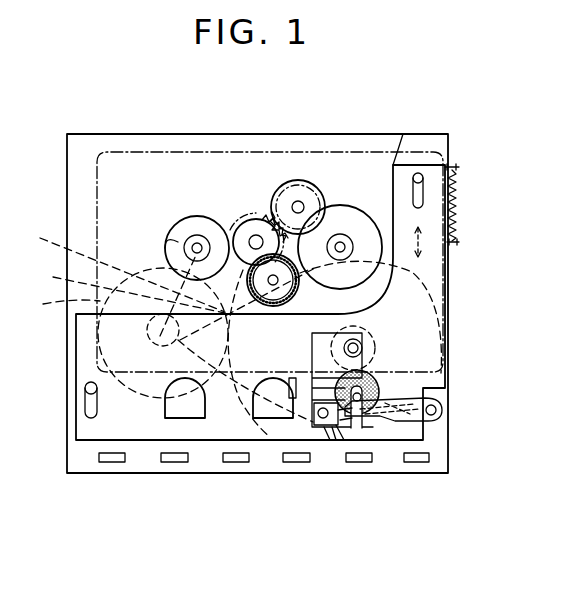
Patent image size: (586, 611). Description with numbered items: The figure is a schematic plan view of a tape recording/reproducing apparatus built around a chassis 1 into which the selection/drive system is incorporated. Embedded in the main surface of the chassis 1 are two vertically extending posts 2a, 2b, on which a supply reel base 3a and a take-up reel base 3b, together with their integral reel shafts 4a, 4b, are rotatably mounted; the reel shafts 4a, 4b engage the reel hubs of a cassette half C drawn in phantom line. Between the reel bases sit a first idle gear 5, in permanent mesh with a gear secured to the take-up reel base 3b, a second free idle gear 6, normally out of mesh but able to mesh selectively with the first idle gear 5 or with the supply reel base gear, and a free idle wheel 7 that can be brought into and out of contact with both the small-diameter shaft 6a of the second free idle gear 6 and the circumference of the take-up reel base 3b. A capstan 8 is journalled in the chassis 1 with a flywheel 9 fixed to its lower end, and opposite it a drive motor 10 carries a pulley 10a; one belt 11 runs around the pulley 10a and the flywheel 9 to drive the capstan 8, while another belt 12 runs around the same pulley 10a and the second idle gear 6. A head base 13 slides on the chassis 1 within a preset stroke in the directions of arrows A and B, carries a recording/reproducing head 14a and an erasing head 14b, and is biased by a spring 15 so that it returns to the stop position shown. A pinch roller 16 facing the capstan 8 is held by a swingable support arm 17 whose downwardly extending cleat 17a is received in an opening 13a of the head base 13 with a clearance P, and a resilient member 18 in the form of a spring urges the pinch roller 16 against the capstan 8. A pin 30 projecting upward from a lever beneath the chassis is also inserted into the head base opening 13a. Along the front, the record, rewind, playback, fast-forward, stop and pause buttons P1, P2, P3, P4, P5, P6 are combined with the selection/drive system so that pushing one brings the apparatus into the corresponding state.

The chassis 1 is at (78, 148).
The post 2a is at (196, 236).
The post 2b is at (334, 242).
The supply reel base 3a is at (190, 220).
The take-up reel base 3b is at (350, 217).
The reel shaft 4a is at (178, 242).
The reel shaft 4b is at (392, 160).
The first idle gear 5 is at (297, 192).
The second free idle gear 6 is at (250, 228).
The small-diameter shaft 6a is at (256, 240).
The free idle wheel 7 is at (262, 265).
The capstan 8 is at (362, 347).
The flywheel 9 is at (426, 293).
The drive motor 10 is at (48, 305).
The pulley 10a is at (160, 348).
The belt 11 is at (60, 278).
The belt 12 is at (46, 241).
The head base 13 is at (80, 432).
The opening 13a is at (327, 436).
The recording/reproducing head 14a is at (291, 421).
The erasing head 14b is at (188, 420).
The spring 15 is at (455, 218).
The pinch roller 16 is at (378, 384).
The support arm 17 is at (438, 421).
The cleat 17a is at (372, 438).
The resilient member 18 is at (312, 432).
The pin 30 is at (286, 420).
The cassette half C is at (97, 200).
The clearance P is at (333, 441).
The record button P1 is at (108, 462).
The rewind button P2 is at (173, 462).
The playback button P3 is at (236, 462).
The fast-forward button P4 is at (297, 462).
The stop button P5 is at (360, 462).
The pause button P6 is at (419, 462).